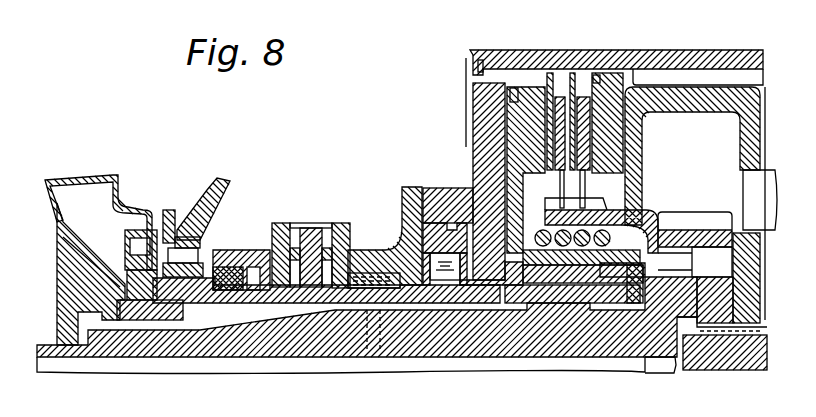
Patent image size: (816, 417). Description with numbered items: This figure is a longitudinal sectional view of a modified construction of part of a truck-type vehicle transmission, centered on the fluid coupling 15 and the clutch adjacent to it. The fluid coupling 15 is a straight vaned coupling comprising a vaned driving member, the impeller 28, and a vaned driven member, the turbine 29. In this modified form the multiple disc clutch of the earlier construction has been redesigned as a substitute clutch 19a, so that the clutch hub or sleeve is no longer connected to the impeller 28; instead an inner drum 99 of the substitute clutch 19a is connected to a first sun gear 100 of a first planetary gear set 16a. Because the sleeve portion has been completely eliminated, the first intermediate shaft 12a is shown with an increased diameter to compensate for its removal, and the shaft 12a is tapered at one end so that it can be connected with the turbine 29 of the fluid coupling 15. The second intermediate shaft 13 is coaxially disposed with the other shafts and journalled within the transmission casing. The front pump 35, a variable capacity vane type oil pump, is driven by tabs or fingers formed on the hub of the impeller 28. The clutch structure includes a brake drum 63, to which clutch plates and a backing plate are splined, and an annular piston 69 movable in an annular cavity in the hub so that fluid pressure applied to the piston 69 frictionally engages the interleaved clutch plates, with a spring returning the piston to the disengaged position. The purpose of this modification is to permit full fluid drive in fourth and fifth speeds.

The first intermediate shaft 12a is at (436, 352).
The second intermediate shaft 13 is at (741, 372).
The fluid coupling 15 is at (232, 168).
The first planetary gear set 16a is at (718, 185).
The substitute clutch 19a is at (583, 86).
The impeller 28 is at (200, 200).
The turbine 29 is at (87, 178).
The front pump 35 is at (319, 222).
The brake drum 63 is at (510, 50).
The annular piston 69 is at (517, 123).
The inner drum 99 is at (603, 198).
The first sun gear 100 is at (698, 219).